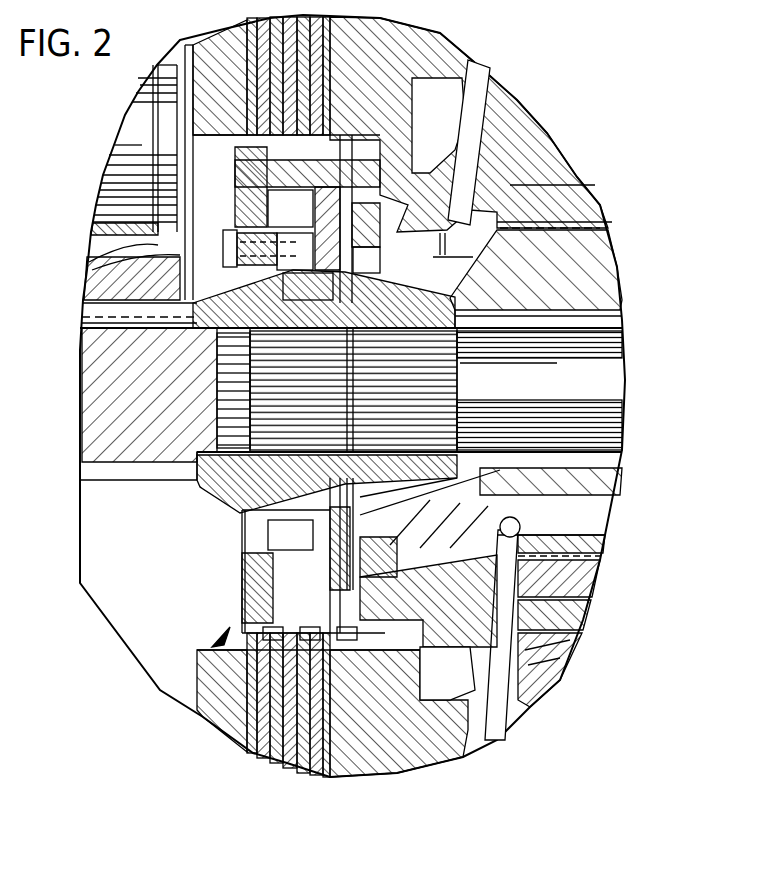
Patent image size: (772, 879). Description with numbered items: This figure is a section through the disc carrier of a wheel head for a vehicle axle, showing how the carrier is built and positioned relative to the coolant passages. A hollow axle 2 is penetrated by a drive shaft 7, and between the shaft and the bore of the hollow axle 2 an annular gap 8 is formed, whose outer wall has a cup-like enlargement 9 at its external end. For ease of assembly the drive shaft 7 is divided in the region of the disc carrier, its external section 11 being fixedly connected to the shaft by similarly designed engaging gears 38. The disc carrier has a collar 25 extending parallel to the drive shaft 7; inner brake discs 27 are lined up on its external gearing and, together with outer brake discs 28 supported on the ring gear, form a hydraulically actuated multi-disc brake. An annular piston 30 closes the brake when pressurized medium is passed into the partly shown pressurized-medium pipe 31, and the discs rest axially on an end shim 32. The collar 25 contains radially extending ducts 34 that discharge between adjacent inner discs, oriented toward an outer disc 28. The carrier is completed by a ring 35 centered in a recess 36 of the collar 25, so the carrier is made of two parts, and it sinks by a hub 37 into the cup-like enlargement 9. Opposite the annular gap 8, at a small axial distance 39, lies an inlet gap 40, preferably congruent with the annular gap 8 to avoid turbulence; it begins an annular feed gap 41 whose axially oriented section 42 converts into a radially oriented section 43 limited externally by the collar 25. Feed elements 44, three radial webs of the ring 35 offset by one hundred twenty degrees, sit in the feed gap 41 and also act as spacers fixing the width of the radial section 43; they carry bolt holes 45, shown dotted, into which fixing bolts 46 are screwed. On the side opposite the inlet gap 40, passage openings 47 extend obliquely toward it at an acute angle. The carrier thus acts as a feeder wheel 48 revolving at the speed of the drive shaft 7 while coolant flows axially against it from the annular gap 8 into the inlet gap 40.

The hollow axle 2 is at (575, 265).
The drive shaft 7 is at (608, 428).
The annular gap 8 is at (487, 313).
The cup-like enlargement 9 is at (607, 493).
The external section 11 is at (130, 415).
The collar 25 is at (540, 668).
The inner brake discs 27 is at (345, 772).
The outer brake discs 28 is at (282, 763).
The annular piston 30 is at (398, 35).
The pressurized-medium pipe 31 is at (440, 45).
The end shim 32 is at (207, 715).
The ducts 34 is at (290, 208).
The ring 35 is at (243, 603).
The recess 36 is at (575, 600).
The hub 37 is at (413, 508).
The engaging gears 38 is at (237, 487).
The axial distance 39 is at (432, 465).
The inlet gap 40 is at (267, 533).
The feed gap 41 is at (243, 567).
The axially oriented section 42 is at (110, 327).
The radially oriented section 43 is at (95, 200).
The feed elements 44 is at (305, 290).
The bolt holes 45 is at (225, 222).
The fixing bolts 46 is at (90, 251).
The passage openings 47 is at (297, 537).
The feeder wheel 48 is at (197, 650).